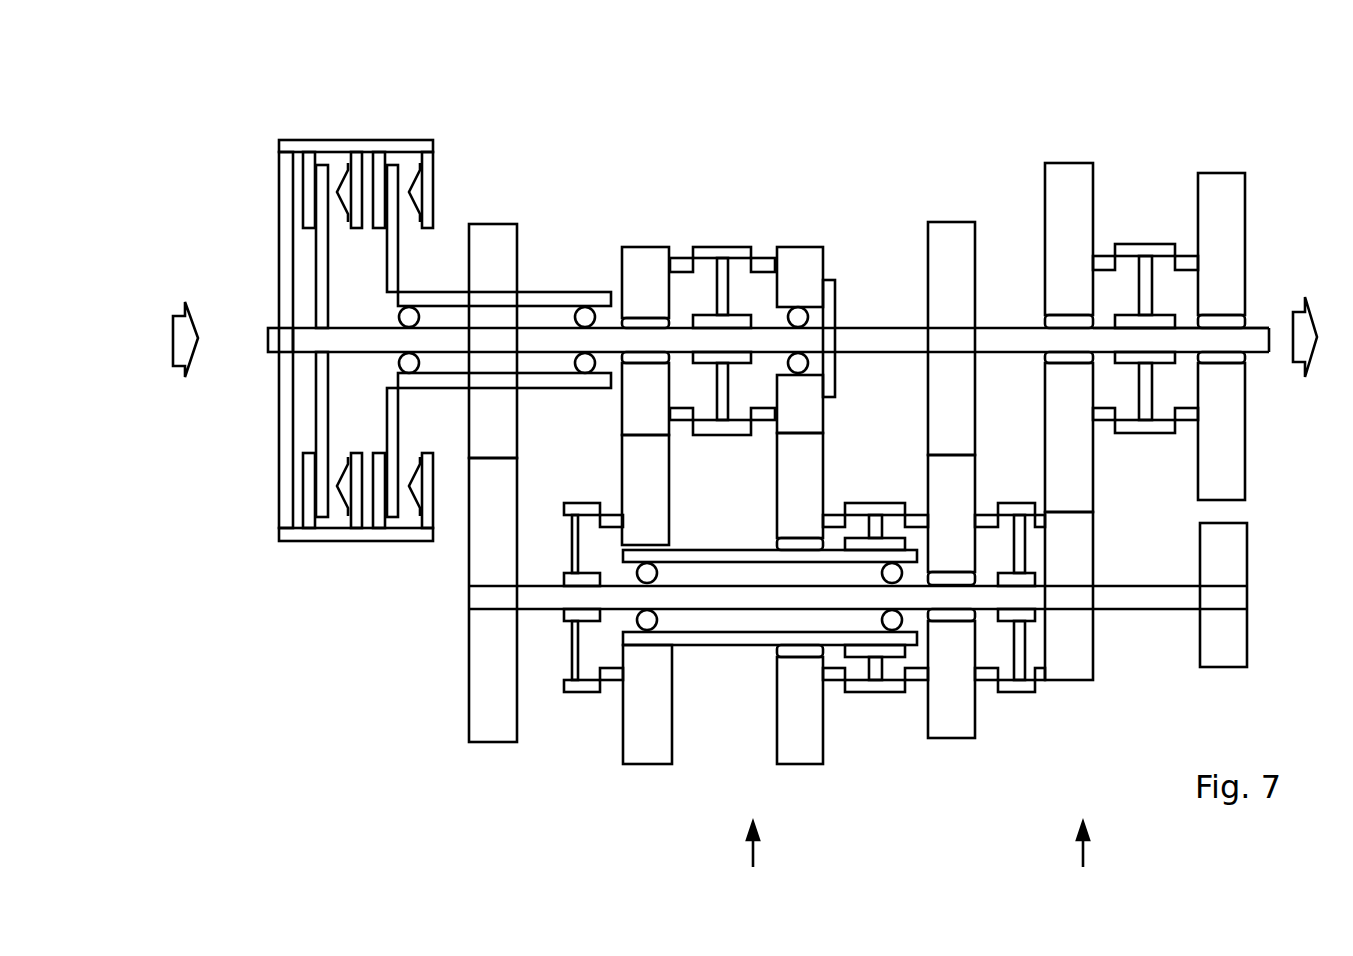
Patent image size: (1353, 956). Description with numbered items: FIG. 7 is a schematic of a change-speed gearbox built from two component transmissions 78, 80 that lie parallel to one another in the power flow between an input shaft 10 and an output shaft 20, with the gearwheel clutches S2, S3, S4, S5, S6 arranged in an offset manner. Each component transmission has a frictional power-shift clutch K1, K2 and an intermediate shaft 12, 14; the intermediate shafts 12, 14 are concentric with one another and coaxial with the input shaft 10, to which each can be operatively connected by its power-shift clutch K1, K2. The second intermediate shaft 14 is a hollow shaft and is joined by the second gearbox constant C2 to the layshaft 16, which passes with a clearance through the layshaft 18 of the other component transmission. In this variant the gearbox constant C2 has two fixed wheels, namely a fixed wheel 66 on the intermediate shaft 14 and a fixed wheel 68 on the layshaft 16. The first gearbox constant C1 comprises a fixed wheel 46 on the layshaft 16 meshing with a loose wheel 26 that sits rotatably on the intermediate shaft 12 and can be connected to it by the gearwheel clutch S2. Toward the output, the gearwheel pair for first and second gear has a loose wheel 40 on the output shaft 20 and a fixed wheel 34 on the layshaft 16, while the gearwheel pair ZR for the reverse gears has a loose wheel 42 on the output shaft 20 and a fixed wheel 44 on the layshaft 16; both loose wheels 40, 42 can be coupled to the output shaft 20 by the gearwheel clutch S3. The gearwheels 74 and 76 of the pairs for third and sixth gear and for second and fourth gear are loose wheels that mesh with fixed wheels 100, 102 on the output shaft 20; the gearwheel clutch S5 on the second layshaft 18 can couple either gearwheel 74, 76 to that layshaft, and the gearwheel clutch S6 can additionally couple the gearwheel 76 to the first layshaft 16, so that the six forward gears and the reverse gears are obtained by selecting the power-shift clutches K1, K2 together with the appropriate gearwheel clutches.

The input shaft 10 is at (273, 343).
The intermediate shaft 12 is at (327, 342).
The second intermediate shaft 14 is at (422, 292).
The layshaft 16 is at (549, 598).
The layshaft 18 is at (645, 645).
The output shaft 20 is at (1253, 320).
The loose wheel 26 is at (647, 410).
The fixed wheel 34 is at (1082, 548).
The loose wheel 40 is at (1068, 257).
The loose wheel 42 is at (1222, 208).
The fixed wheel 44 is at (1223, 558).
The fixed wheel 46 is at (648, 717).
The fixed wheel 66 is at (503, 433).
The fixed wheel 68 is at (493, 717).
The gearwheel 74 is at (797, 470).
The gearwheel 76 is at (952, 490).
The component transmission 78 is at (752, 863).
The component transmission 80 is at (1081, 863).
The fixed wheel 100 is at (797, 422).
The fixed wheel 102 is at (935, 257).
The power-shift clutch K1 is at (328, 517).
The power-shift clutch K2 is at (398, 517).
The first gearbox constant C1 is at (676, 304).
The second gearbox constant C2 is at (485, 456).
The gearwheel clutch S2 is at (728, 247).
The gearwheel clutch S3 is at (1150, 244).
The gearwheel clutch S4 is at (587, 695).
The gearwheel clutch S5 is at (868, 693).
The gearwheel clutch S6 is at (1008, 693).
The gearwheel pair ZR is at (1264, 279).